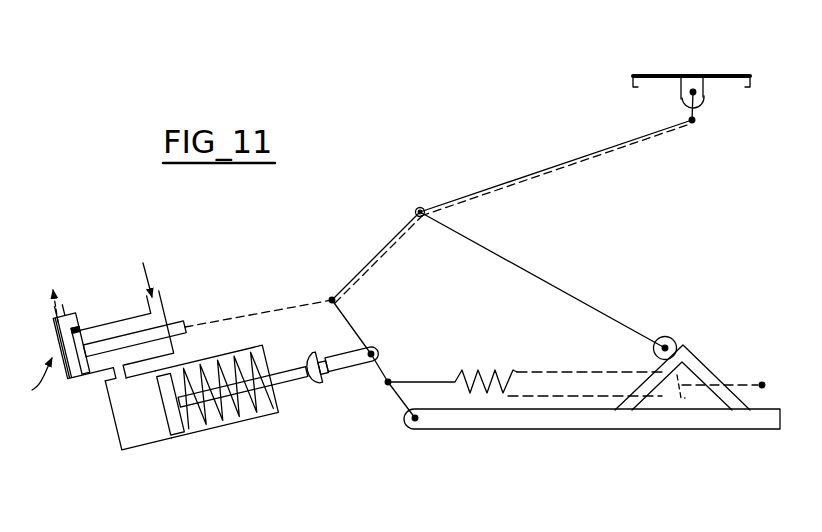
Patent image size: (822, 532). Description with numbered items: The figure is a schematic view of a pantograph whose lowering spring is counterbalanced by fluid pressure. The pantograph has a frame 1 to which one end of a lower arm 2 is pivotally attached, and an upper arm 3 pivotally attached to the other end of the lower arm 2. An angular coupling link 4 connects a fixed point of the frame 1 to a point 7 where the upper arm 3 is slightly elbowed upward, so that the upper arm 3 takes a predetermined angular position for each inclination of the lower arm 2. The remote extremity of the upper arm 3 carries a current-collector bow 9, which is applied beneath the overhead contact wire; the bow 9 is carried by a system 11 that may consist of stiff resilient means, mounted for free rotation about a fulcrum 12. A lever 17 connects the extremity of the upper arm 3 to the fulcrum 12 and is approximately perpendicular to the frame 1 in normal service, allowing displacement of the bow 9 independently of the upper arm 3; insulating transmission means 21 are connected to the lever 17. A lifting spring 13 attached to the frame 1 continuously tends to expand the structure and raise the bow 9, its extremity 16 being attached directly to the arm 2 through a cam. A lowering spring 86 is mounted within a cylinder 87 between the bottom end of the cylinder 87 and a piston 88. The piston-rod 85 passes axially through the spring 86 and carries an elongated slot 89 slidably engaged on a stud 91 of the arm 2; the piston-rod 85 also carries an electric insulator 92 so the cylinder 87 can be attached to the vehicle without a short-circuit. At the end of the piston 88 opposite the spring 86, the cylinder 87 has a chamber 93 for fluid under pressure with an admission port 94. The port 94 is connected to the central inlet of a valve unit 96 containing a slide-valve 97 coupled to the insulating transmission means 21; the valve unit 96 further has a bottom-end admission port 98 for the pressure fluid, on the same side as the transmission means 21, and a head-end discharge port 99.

The frame 1 is at (610, 431).
The lower arm 2 is at (397, 400).
The upper arm 3 is at (497, 185).
The angular coupling link 4 is at (567, 293).
The point 7 is at (418, 207).
The current-collector bow 9 is at (723, 73).
The system 11 is at (700, 83).
The fulcrum 12 is at (682, 100).
The lifting spring 13 is at (493, 393).
The extremity 16 is at (393, 377).
The lever 17 is at (695, 118).
The transmission means 21 is at (566, 172).
The piston-rod 85 is at (295, 370).
The lowering spring 86 is at (247, 417).
The cylinder 87 is at (147, 438).
The piston 88 is at (173, 423).
The elongated slot 89 is at (347, 369).
The stud 91 is at (380, 348).
The electric insulator 92 is at (320, 356).
The chamber 93 is at (125, 422).
The admission port 94 is at (113, 374).
The valve unit 96 is at (29, 387).
The slide-valve 97 is at (82, 333).
The bottom-end admission port 98 is at (170, 297).
The head-end discharge port 99 is at (53, 320).